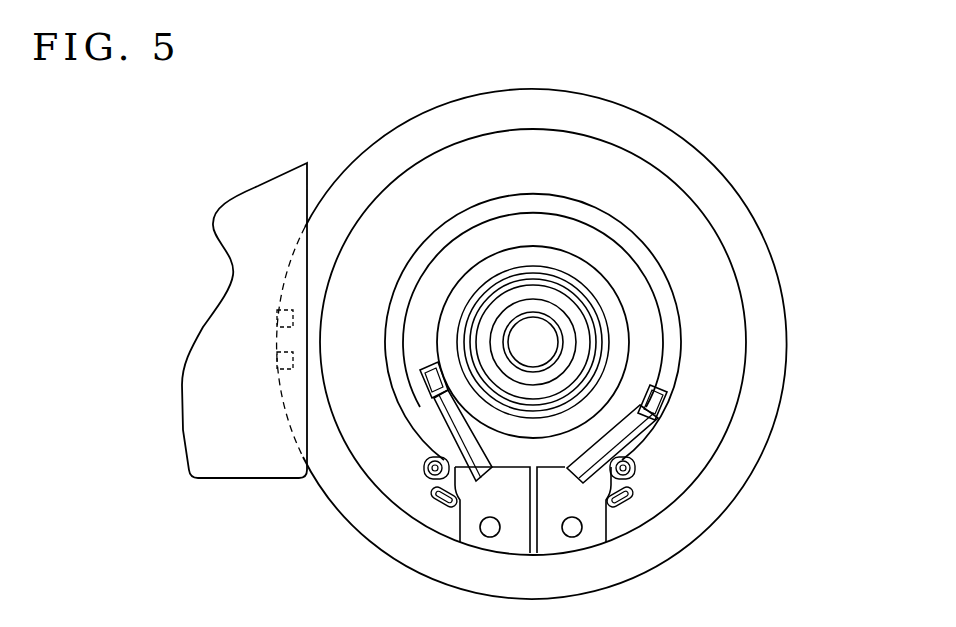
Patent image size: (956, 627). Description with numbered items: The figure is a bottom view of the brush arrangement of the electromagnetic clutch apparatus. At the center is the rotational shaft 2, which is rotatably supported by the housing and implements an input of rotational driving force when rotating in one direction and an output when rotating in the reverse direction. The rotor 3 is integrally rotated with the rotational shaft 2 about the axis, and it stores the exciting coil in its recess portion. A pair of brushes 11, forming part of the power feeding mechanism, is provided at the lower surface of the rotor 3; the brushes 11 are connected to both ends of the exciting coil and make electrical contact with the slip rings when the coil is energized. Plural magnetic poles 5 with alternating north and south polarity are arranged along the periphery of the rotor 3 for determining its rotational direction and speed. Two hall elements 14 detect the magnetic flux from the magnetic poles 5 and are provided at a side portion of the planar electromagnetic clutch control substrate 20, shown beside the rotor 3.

The magnetic poles 5 is at (728, 212).
The rotor 3 is at (576, 275).
The rotational shaft 2 is at (527, 337).
The brushes 11 is at (714, 356).
The electromagnetic clutch control substrate 20 is at (232, 460).
The hall elements 14 is at (277, 363).